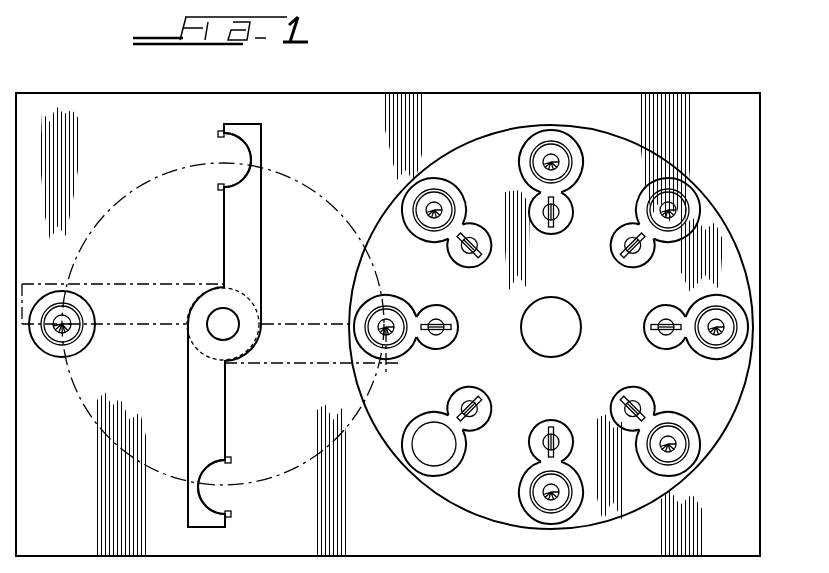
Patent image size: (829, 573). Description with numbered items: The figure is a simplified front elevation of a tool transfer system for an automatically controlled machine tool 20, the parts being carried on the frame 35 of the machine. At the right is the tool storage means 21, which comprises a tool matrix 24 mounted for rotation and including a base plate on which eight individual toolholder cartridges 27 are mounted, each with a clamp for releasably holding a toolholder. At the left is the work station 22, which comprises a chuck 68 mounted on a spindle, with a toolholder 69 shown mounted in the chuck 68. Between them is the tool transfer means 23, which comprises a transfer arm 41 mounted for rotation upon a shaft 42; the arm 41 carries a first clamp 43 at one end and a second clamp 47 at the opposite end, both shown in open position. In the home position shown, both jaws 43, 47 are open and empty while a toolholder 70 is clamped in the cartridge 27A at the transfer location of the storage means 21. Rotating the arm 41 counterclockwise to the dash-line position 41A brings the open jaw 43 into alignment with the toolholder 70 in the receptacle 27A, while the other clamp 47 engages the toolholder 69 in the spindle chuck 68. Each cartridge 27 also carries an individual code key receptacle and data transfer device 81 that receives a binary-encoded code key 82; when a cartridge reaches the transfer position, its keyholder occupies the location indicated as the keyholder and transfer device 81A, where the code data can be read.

The automatically controlled machine tool 20 is at (586, 90).
The frame 35 is at (693, 103).
The tool storage means 21 is at (434, 503).
The tool matrix 24 is at (631, 503).
The work station 22 is at (52, 288).
The tool transfer means 23 is at (170, 393).
The transfer arm 41 is at (252, 232).
The transfer arm position 41A is at (162, 326).
The shaft 42 is at (230, 318).
The first clamp 43 is at (215, 493).
The second clamp 47 is at (232, 153).
The chuck 68 is at (64, 340).
The toolholder 69 is at (58, 332).
The toolholder 70 is at (387, 320).
The toolholder cartridge 27 is at (458, 206).
The cartridge at transfer location 27A is at (408, 353).
The code key receptacle and data transfer device 81 is at (562, 236).
The keyholder and transfer device at transfer position 81A is at (452, 311).
The code key 82 is at (655, 322).